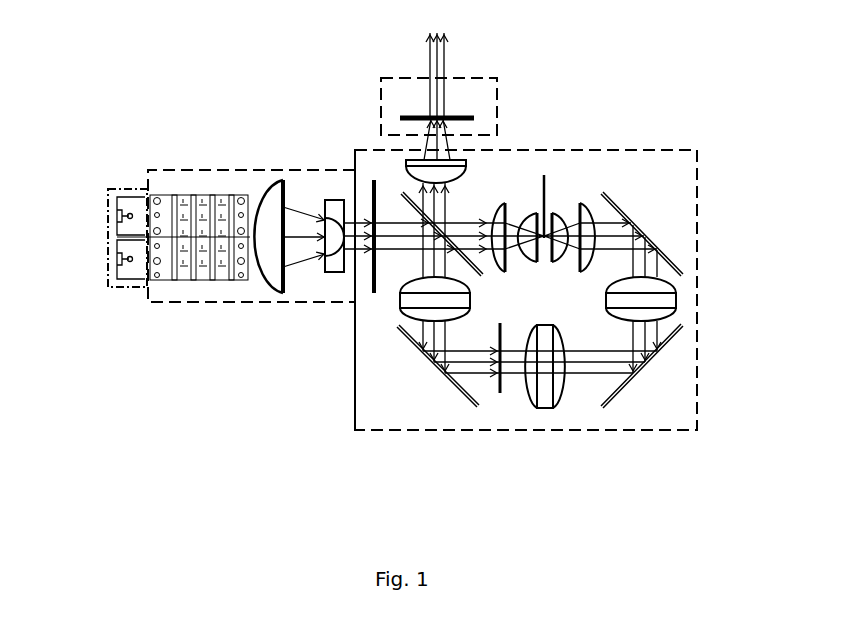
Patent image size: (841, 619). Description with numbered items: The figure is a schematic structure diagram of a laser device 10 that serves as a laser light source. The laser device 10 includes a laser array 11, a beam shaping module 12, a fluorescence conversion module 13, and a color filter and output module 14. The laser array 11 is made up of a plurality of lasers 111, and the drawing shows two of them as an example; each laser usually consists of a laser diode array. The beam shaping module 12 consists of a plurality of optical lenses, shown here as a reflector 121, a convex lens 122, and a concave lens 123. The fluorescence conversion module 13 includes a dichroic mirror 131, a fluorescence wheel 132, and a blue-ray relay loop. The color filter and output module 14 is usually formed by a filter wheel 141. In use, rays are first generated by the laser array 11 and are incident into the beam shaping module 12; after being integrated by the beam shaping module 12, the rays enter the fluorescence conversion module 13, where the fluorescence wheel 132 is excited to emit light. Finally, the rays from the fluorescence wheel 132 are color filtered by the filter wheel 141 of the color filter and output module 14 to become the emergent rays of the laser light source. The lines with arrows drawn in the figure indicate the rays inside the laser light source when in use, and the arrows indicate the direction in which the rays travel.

The laser device 10 is at (103, 85).
The laser array 11 is at (115, 188).
The lasers 111 is at (128, 259).
The beam shaping module 12 is at (232, 170).
The reflector 121 is at (183, 268).
The convex lens 122 is at (262, 285).
The concave lens 123 is at (335, 275).
The fluorescence conversion module 13 is at (652, 150).
The dichroic mirror 131 is at (373, 178).
The fluorescence wheel 132 is at (640, 300).
The color filter and output module 14 is at (497, 78).
The filter wheel 141 is at (400, 114).